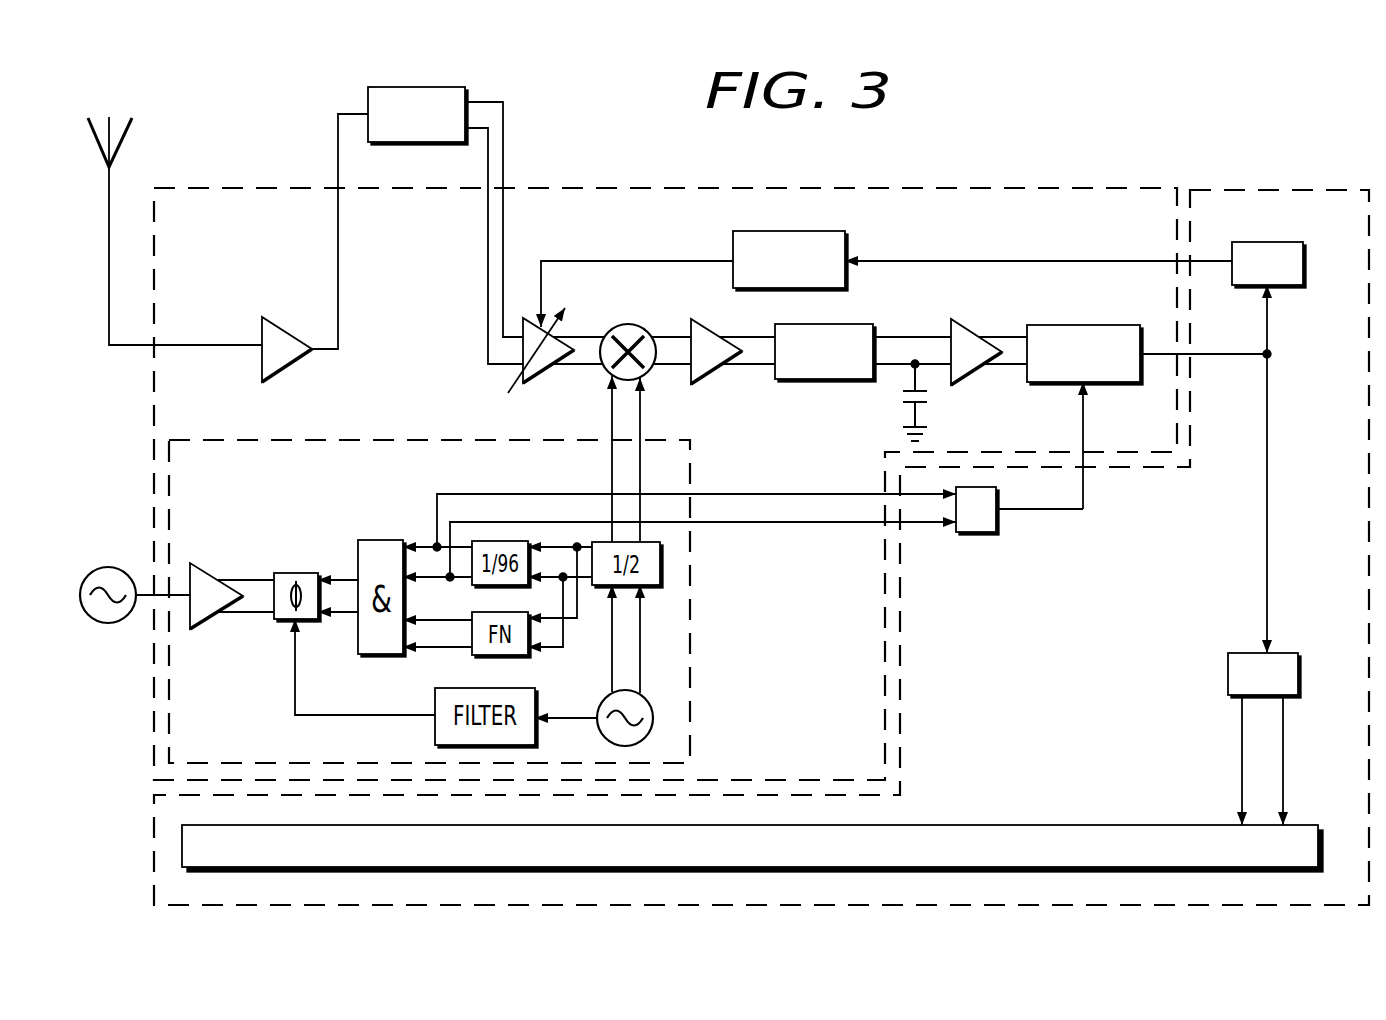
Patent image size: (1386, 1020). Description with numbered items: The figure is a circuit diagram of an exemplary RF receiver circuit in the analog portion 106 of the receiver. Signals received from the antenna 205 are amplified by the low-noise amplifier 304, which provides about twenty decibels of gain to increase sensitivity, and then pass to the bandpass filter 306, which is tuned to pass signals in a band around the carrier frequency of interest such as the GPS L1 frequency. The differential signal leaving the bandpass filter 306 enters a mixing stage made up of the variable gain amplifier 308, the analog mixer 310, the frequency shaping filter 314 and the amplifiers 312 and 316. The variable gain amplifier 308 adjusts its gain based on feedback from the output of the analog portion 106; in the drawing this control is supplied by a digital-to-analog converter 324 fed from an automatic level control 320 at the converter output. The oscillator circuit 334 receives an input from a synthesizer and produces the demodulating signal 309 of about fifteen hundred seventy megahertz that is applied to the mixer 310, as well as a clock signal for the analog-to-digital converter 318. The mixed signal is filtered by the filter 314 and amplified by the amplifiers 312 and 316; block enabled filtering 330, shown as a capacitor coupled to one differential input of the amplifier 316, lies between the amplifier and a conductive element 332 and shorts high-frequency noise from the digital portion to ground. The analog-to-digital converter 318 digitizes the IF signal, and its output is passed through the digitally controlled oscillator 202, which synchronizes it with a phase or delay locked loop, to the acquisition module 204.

The analog portion 106 is at (1062, 192).
The digitally controlled oscillator 202 is at (1228, 666).
The acquisition module 204 is at (980, 825).
The antenna 205 is at (127, 128).
The low-noise amplifier 304 is at (287, 368).
The bandpass filter 306 is at (432, 87).
The variable gain amplifier 308 is at (542, 377).
The demodulating signal 309 is at (642, 421).
The mixer 310 is at (628, 322).
The amplifier 312 is at (713, 313).
The filter 314 is at (808, 385).
The amplifier 316 is at (963, 332).
The analog-to-digital converter 318 is at (1112, 325).
The automatic level control 320 is at (1303, 263).
The D/A converter 324 is at (817, 232).
The block enabled filtering 330 is at (927, 399).
The conductive element 332 is at (903, 427).
The oscillator circuit 334 is at (690, 645).